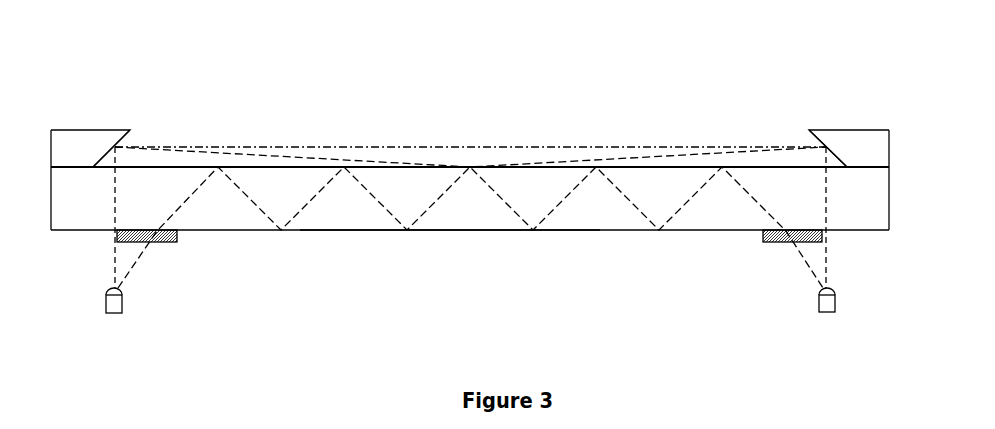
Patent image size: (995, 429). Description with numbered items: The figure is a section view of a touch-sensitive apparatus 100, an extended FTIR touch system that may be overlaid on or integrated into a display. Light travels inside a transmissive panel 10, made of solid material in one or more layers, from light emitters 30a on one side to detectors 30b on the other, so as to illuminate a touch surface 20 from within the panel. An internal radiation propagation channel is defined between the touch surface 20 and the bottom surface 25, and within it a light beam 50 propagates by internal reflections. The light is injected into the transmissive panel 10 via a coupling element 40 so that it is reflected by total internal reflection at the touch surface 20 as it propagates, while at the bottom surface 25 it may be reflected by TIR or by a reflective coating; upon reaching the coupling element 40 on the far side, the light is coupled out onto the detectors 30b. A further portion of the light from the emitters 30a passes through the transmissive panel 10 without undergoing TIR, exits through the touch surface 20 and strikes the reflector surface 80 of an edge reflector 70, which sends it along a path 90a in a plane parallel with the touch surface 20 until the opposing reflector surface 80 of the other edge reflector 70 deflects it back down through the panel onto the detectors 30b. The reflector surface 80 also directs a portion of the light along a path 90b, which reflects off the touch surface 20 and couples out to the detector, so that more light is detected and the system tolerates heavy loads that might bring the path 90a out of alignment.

The touch-sensitive apparatus 100 is at (528, 103).
The transmissive panel 10 is at (341, 217).
The touch surface 20 is at (200, 167).
The bottom surface 25 is at (445, 230).
The light emitters 30a is at (117, 313).
The detectors 30b is at (835, 312).
The coupling element 40 is at (165, 242).
The light beam 50 is at (266, 213).
The edge reflector 70 is at (102, 130).
The reflector surface 80 is at (118, 146).
The path 90a is at (280, 147).
The path 90b is at (338, 158).